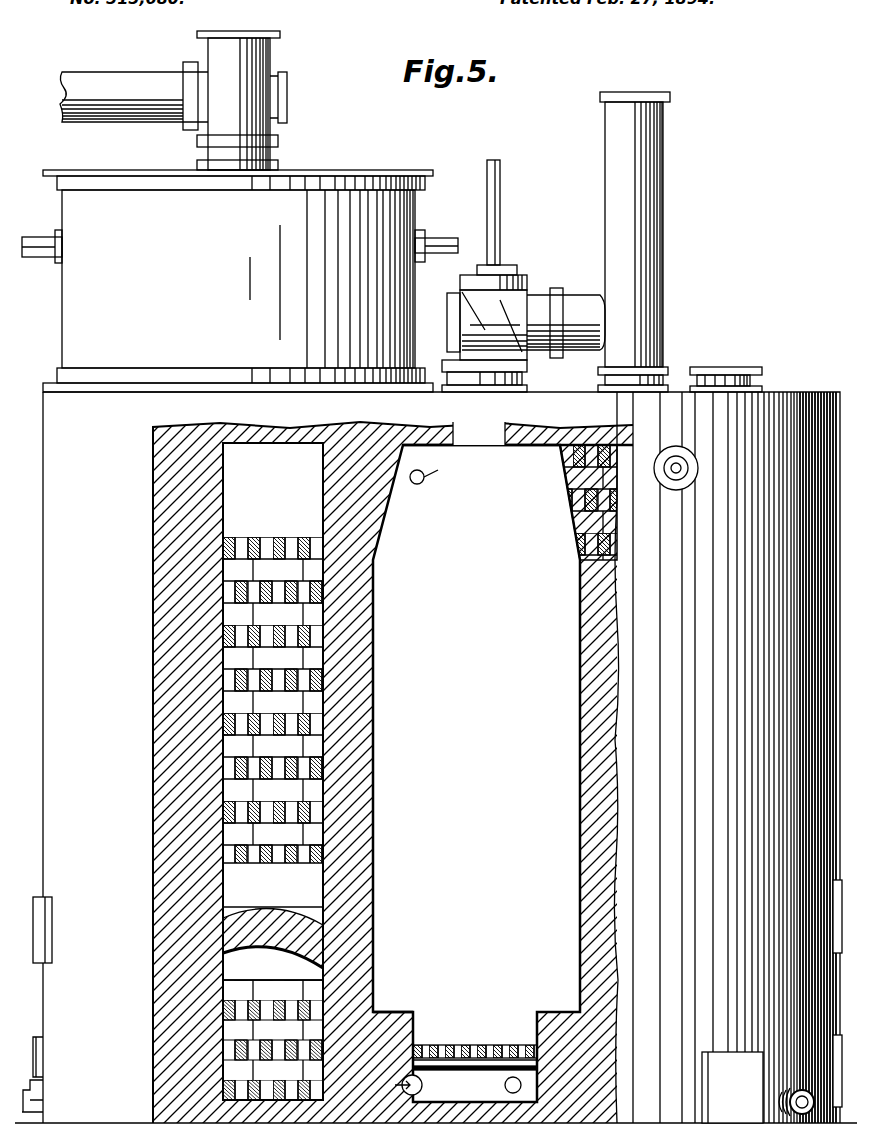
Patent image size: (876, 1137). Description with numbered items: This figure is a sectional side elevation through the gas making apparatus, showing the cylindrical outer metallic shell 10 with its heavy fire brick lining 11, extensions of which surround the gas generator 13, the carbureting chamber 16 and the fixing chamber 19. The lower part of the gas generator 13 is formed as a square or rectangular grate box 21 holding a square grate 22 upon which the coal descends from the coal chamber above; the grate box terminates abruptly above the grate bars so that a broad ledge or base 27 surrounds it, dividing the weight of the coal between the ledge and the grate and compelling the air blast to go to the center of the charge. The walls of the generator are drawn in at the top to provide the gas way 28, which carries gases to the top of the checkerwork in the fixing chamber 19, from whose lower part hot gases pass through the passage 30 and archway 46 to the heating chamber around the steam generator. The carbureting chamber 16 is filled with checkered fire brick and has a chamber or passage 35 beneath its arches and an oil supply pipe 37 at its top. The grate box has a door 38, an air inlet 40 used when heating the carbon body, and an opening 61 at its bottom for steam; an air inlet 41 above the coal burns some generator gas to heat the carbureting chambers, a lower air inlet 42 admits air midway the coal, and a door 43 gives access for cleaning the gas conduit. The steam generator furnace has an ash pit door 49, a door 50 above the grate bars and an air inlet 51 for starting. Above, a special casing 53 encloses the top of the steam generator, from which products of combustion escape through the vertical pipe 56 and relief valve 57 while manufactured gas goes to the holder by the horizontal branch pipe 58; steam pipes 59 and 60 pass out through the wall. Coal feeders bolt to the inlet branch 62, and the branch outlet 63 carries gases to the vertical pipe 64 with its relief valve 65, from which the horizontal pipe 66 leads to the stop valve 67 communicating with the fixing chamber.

The outer metallic shell 10 is at (436, 757).
The fire brick lining 11 is at (362, 792).
The gas generator 13 is at (503, 773).
The carbureting chamber 16 is at (588, 502).
The fixing chamber 19 is at (273, 750).
The grate box 21 is at (475, 1039).
The grate 22 is at (475, 1047).
The ledge or base 27 is at (403, 1012).
The gas way 28 is at (273, 771).
The passage 30 is at (273, 971).
The chamber or passage 35 is at (840, 880).
The oil inlet or oil supply pipe 37 is at (677, 448).
The door 38 is at (840, 1035).
The air inlet 40 is at (422, 1085).
The air inlet 41 is at (435, 476).
The lower air inlet 42 is at (790, 1104).
The door 43 is at (732, 1087).
The archway 46 is at (273, 942).
The ash pit door 49 is at (42, 1050).
The door 50 is at (45, 937).
The air inlet 51 is at (43, 1097).
The special casing 53 is at (238, 281).
The vertical pipe 56 is at (218, 155).
The relief valve 57 is at (225, 31).
The horizontal branch pipe 58 is at (173, 96).
The steam pipe 59 is at (42, 237).
The steam pipe 60 is at (436, 239).
The opening 61 is at (555, 1085).
The inlet branch or pipe 62 is at (445, 368).
The branch outlet 63 is at (643, 366).
The vertical pipe 64 is at (648, 234).
The relief valve 65 is at (655, 100).
The horizontal pipe 66 is at (566, 323).
The stop valve 67 is at (487, 260).